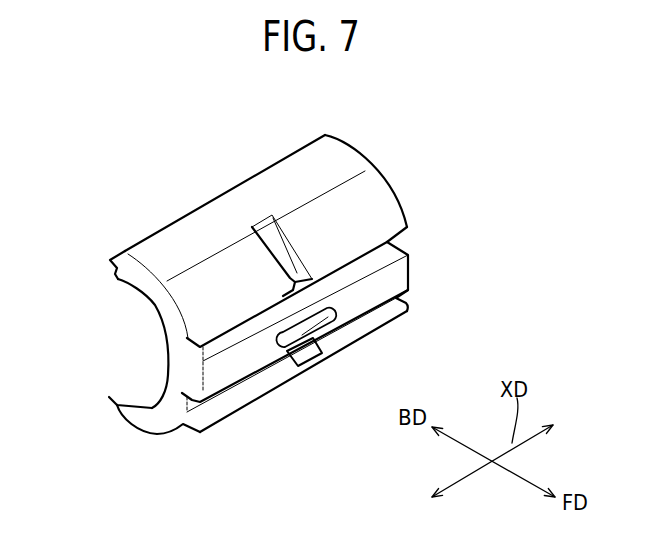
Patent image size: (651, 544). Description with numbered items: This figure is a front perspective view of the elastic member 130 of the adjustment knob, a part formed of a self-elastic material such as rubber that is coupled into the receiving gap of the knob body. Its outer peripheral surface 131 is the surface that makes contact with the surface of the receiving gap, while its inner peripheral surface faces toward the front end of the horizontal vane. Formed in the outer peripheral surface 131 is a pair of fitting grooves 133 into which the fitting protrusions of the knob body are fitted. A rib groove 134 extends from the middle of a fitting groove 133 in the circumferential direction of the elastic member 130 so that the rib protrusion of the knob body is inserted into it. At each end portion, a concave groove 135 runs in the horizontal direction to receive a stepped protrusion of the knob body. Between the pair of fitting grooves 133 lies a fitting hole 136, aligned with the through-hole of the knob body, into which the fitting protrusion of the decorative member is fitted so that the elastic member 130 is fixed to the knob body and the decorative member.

The elastic member 130 is at (178, 141).
The outer peripheral surface 131 is at (288, 168).
The fitting grooves 133 is at (385, 258).
The rib groove 134 is at (285, 259).
The concave groove 135 is at (108, 270).
The fitting hole 136 is at (312, 337).